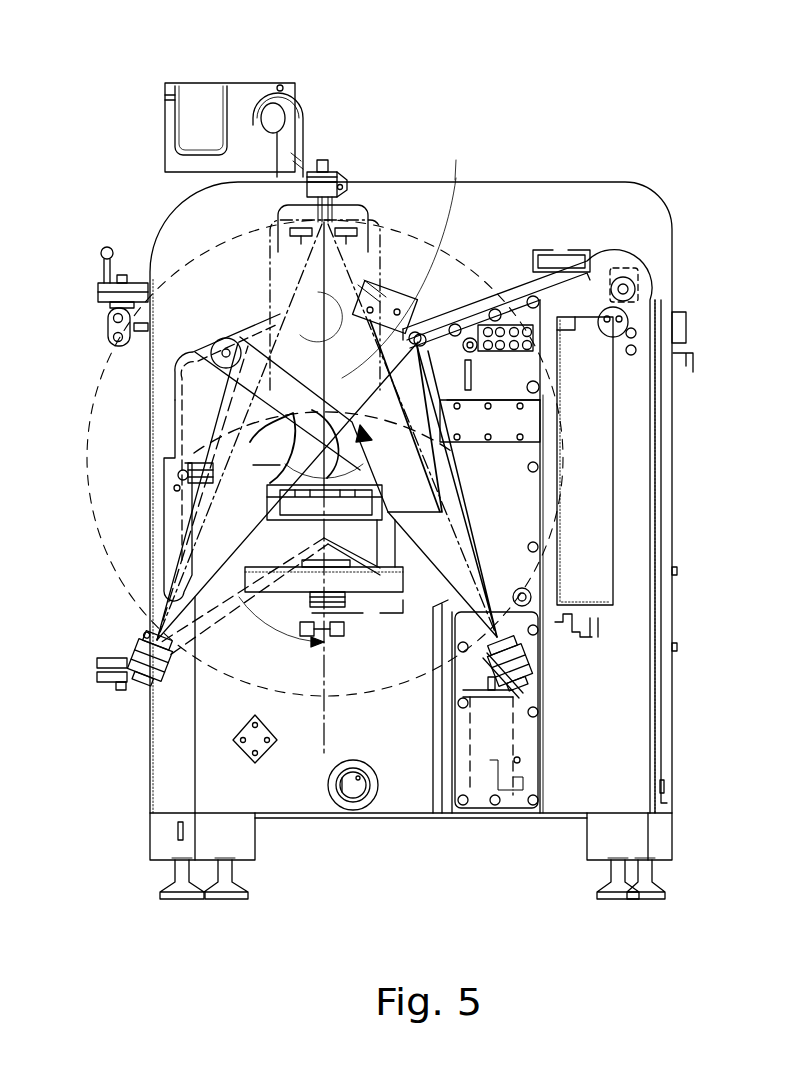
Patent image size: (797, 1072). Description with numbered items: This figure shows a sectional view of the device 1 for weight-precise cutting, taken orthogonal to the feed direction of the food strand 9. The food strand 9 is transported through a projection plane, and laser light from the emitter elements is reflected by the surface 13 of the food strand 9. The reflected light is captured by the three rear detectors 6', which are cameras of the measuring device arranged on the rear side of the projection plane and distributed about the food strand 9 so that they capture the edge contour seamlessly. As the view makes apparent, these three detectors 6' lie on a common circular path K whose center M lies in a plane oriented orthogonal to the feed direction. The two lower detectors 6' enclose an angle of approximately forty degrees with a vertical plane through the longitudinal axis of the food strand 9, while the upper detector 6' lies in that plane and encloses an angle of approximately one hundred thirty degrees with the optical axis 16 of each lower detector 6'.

The device 1 is at (487, 103).
The rear detectors 6' is at (347, 418).
The food strand 9 is at (250, 442).
The surface of the food strand 13 is at (293, 412).
The optical axes 16 is at (318, 292).
The circular path K is at (90, 503).
The center point M is at (455, 522).